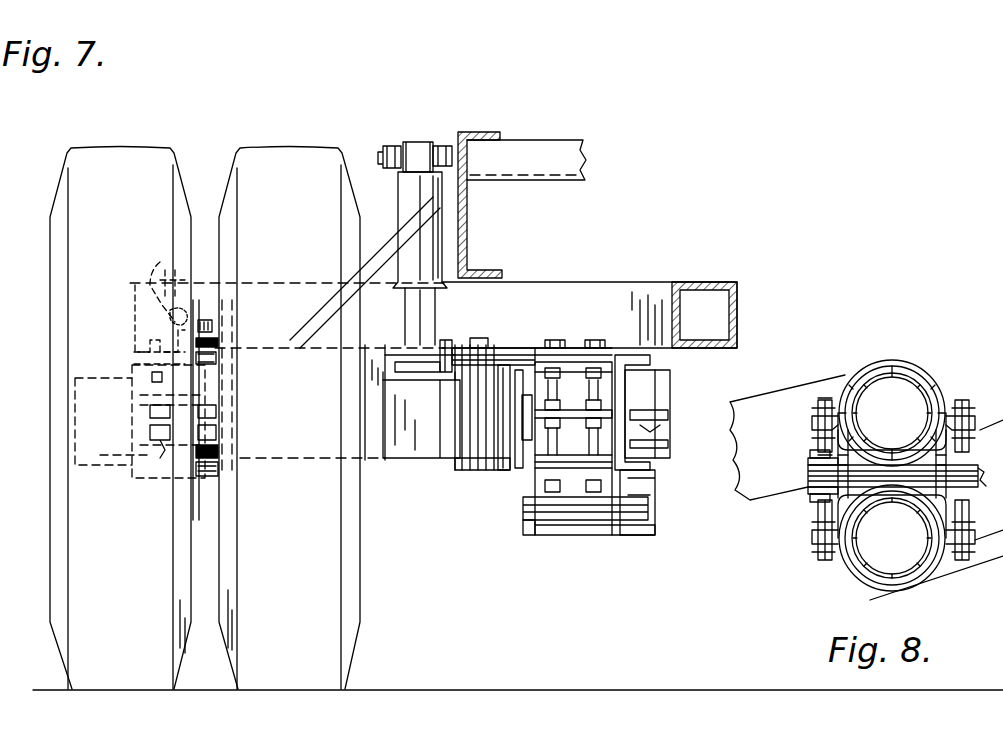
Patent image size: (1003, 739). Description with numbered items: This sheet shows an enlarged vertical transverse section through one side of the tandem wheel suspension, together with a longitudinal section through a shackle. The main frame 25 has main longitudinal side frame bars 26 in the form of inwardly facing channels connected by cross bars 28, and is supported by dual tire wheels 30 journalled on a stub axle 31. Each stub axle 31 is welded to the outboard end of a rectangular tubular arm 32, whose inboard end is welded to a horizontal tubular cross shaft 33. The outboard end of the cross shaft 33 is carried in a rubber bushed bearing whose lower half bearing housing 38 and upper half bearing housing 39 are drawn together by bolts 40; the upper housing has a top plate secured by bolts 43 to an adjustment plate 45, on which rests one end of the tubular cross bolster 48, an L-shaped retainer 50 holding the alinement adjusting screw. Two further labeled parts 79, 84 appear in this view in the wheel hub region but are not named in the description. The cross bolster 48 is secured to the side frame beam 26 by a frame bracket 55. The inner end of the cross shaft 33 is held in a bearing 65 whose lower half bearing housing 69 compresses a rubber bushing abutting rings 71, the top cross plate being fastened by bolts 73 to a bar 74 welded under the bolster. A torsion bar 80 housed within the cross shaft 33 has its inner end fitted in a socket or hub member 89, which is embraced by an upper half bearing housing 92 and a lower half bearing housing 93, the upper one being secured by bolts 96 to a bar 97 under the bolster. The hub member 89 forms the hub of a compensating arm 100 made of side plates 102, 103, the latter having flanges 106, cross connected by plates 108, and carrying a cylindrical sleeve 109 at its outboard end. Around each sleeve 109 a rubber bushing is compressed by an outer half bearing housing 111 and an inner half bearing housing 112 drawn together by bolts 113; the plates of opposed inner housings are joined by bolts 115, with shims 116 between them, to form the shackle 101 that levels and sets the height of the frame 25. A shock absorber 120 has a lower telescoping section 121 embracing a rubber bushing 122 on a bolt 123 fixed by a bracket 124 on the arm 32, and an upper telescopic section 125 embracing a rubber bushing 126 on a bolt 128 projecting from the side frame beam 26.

In FIG. 7, the main frame 25 is at (546, 118).
In FIG. 7, the main longitudinal side frame bars 26 is at (486, 130).
In FIG. 7, the cross bars 28 is at (590, 150).
In FIG. 7, the dual tire wheels 30 is at (230, 168).
In FIG. 7, the stub axle 31 is at (215, 410).
In FIG. 7, the arm 32 is at (372, 415).
In FIG. 7, the tubular cross shaft 33 is at (380, 470).
In FIG. 7, the lower half bearing housing 38 is at (198, 480).
In FIG. 7, the upper half bearing housing 39 is at (188, 398).
In FIG. 7, the bolts 40 is at (165, 440).
In FIG. 7, the bolts 43 is at (212, 322).
In FIG. 7, the adjustment plate 45 is at (214, 345).
In FIG. 7, the cross bolster 48 is at (722, 282).
In FIG. 7, the L-shaped retainer 50 is at (172, 280).
In FIG. 7, the frame bracket 55 is at (388, 228).
In FIG. 7, the bearing 65 is at (478, 472).
In FIG. 7, the lower half bearing housing 69 is at (504, 472).
In FIG. 7, the rings 71 is at (456, 470).
In FIG. 7, the bolts 73 is at (490, 325).
In FIG. 7, the bar 74 is at (492, 348).
In FIG. 7, the brake lever 79 is at (178, 330).
In FIG. 7, the torsion bar 80 is at (614, 395).
In FIG. 7, the brake housing 84 is at (88, 468).
In FIG. 7, the socket or hub member 89 is at (662, 378).
In FIG. 7, the upper half bearing housing 92 is at (640, 397).
In FIG. 7, the lower half bearing housing 93 is at (612, 448).
In FIG. 7, the bolts 96 is at (592, 340).
In FIG. 7, the bar 97 is at (612, 345).
In FIG. 7, the compensating arm 100 is at (628, 427).
In FIG. 8, the compensating arm 100 is at (748, 505).
In FIG. 7, the shackle 101 is at (578, 542).
In FIG. 7, the side plate 102 is at (528, 538).
In FIG. 7, the side plate 103 is at (622, 532).
In FIG. 7, the flanges 106 is at (652, 360).
In FIG. 7, the plates 108 is at (645, 510).
In FIG. 8, the plates 108 is at (888, 360).
In FIG. 8, the cylindrical sleeve 109 is at (900, 368).
In FIG. 8, the outer half bearing housing 111 is at (925, 372).
In FIG. 8, the inner half bearing housing 112 is at (835, 508).
In FIG. 8, the bolts 113 is at (825, 398).
In FIG. 8, the bolts 115 is at (812, 460).
In FIG. 8, the shims 116 is at (808, 478).
In FIG. 7, the shock absorber 120 is at (425, 207).
In FIG. 7, the lower telescoping section 121 is at (430, 296).
In FIG. 7, the rubber bushing 122 is at (410, 368).
In FIG. 7, the bolt 123 is at (388, 355).
In FIG. 7, the bracket 124 is at (385, 372).
In FIG. 7, the upper telescopic section 125 is at (432, 232).
In FIG. 7, the rubber bushing 126 is at (448, 142).
In FIG. 7, the bolt 128 is at (378, 143).